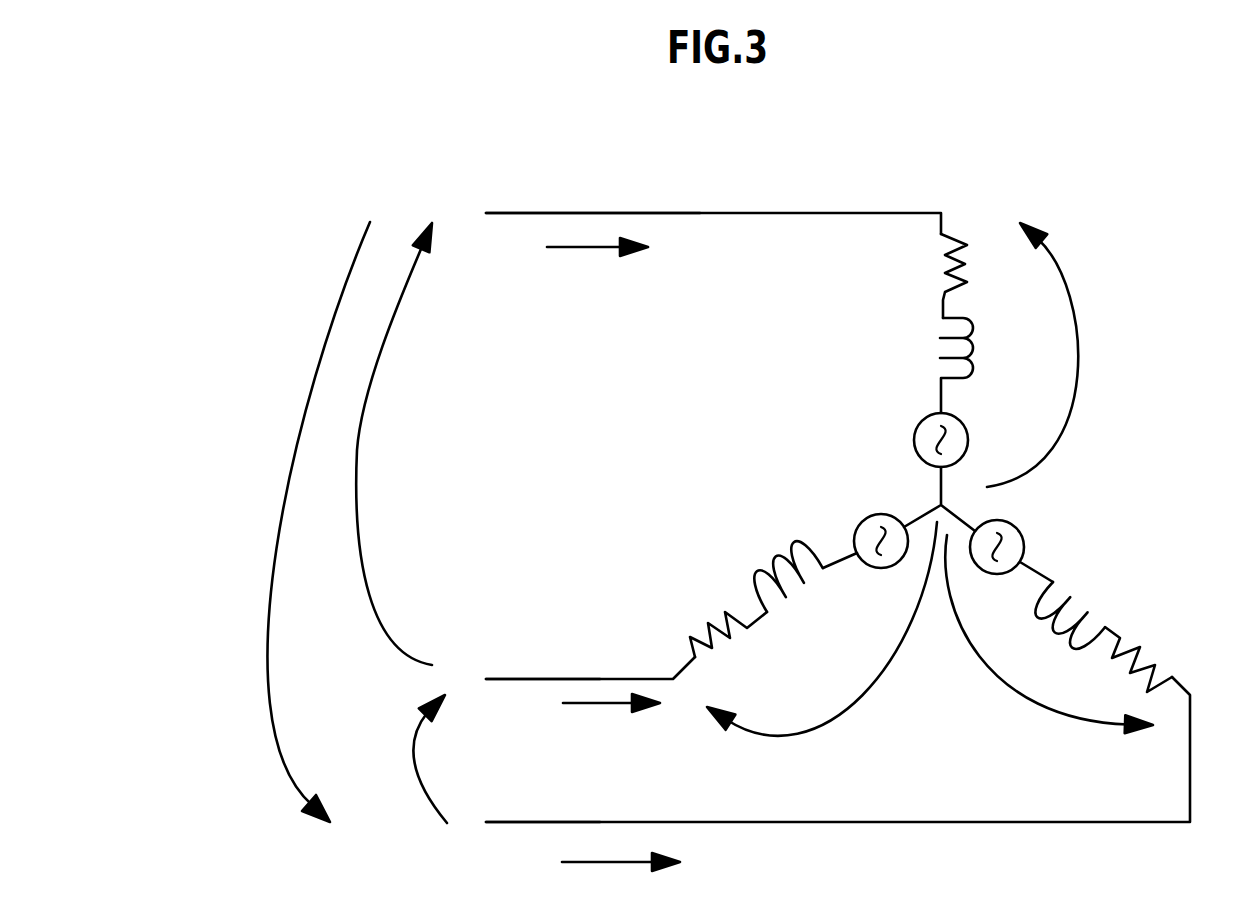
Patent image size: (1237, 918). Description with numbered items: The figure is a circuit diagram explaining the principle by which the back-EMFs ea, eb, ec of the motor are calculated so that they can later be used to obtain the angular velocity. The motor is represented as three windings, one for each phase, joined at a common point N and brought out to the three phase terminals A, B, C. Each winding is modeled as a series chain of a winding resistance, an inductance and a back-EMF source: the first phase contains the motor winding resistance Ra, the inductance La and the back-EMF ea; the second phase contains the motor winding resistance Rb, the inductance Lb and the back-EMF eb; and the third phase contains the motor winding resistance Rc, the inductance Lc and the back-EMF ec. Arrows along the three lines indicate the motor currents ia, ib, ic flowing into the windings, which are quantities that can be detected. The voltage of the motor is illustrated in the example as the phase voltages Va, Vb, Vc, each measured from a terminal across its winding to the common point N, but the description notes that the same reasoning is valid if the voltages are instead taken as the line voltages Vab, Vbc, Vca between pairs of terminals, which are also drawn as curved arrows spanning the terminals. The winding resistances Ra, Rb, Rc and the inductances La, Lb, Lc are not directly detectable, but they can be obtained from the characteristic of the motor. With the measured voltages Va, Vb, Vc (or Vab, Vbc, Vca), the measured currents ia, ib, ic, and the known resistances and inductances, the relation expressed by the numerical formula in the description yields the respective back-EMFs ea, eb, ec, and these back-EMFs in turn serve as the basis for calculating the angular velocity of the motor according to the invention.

The phase A terminal A is at (588, 191).
The phase B terminal B is at (538, 648).
The phase C terminal C is at (543, 795).
The neutral point N is at (929, 496).
The motor winding resistance Ra is at (982, 276).
The inductance La is at (985, 365).
The back-EMF ea is at (972, 439).
The motor winding resistance Rb is at (728, 661).
The inductance Lb is at (783, 592).
The back-EMF eb is at (865, 560).
The motor winding resistance Rc is at (1147, 659).
The inductance Lc is at (1076, 612).
The back-EMF ec is at (1024, 542).
The motor current ia is at (597, 271).
The motor current ib is at (611, 729).
The motor current ic is at (621, 885).
The phase voltage Va is at (1058, 355).
The phase voltage Vb is at (822, 645).
The phase voltage Vc is at (1049, 646).
The line voltage Vab is at (394, 444).
The line voltage Vbc is at (398, 759).
The line voltage Vca is at (277, 522).